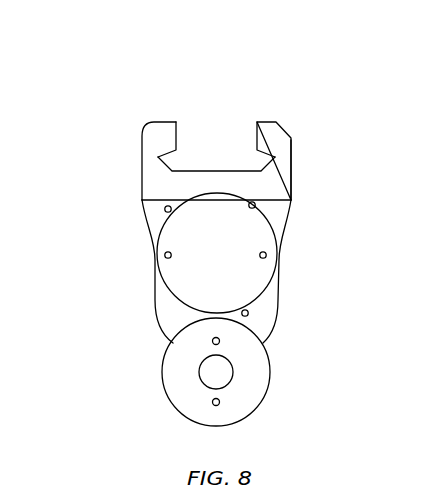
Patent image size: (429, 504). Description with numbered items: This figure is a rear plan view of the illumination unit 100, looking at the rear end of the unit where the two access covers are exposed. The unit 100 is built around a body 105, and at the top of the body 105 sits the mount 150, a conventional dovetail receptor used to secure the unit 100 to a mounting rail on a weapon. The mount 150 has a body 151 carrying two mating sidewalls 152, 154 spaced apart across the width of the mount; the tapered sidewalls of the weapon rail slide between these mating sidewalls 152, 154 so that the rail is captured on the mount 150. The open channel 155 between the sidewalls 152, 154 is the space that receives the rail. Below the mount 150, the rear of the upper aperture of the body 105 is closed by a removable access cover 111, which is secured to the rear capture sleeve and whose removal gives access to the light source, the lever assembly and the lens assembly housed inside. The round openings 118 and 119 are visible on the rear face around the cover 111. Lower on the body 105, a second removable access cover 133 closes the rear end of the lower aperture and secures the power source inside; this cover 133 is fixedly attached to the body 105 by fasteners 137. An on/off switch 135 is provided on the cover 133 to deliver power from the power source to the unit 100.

The illumination unit 100 is at (330, 279).
The body 105 is at (165, 307).
The removable access cover 111 is at (258, 239).
The side apertures 118 is at (180, 259).
The fastener holes 119 is at (155, 218).
The removable access cover 133 is at (248, 394).
The on/off switch 135 is at (203, 368).
The fasteners 137 is at (203, 342).
The mount 150 is at (138, 124).
The body of the mount 151 is at (292, 180).
The mating sidewall 152 is at (187, 138).
The mating sidewall 154 is at (250, 148).
The channel 155 is at (202, 168).